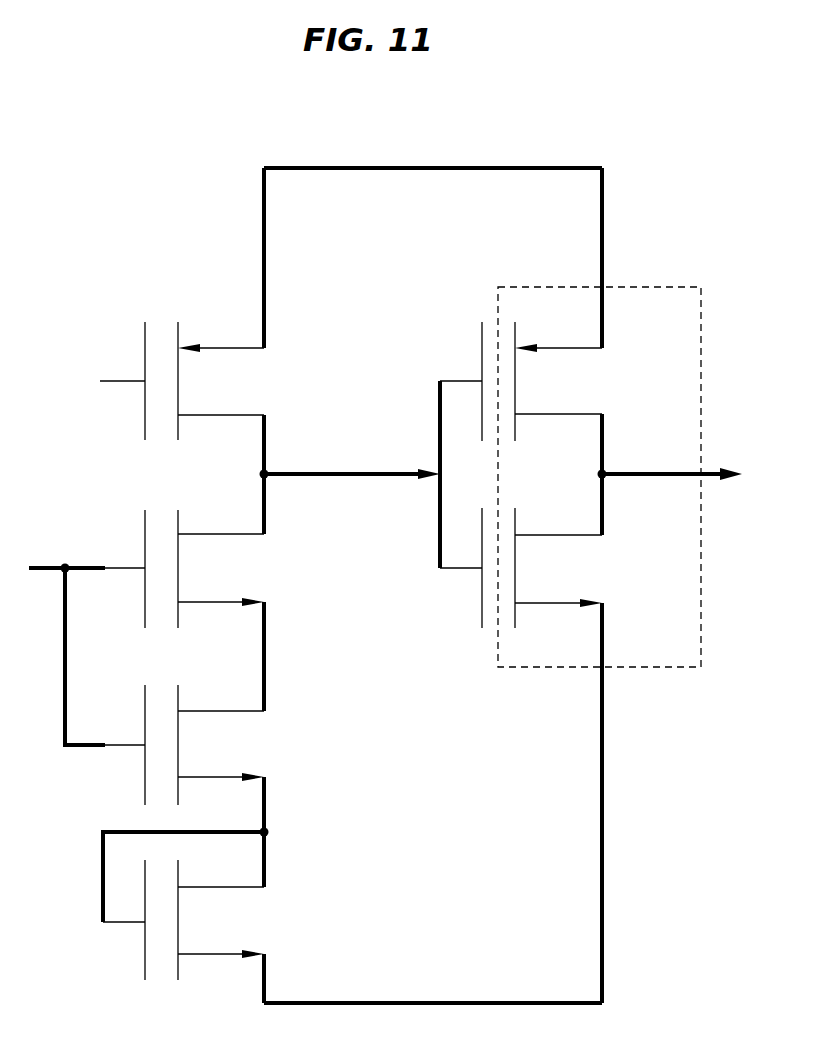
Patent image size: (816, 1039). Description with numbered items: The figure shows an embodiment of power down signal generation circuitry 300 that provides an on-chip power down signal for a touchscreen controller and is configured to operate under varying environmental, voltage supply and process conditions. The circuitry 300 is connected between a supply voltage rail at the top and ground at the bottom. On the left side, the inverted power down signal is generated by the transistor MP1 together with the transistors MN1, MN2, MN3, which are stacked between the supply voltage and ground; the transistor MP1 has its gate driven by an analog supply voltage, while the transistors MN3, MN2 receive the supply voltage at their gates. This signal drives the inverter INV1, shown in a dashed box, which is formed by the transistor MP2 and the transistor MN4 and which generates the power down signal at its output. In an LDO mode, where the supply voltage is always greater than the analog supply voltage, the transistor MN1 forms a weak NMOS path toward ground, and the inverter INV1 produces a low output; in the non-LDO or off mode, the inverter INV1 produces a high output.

The power down signal generation circuitry 300 is at (660, 113).
The inverter INV1 is at (678, 287).
The transistor MP1 is at (218, 381).
The transistor MP2 is at (558, 381).
The transistor MN1 is at (218, 920).
The transistor MN2 is at (218, 745).
The transistor MN3 is at (218, 569).
The transistor MN4 is at (558, 568).